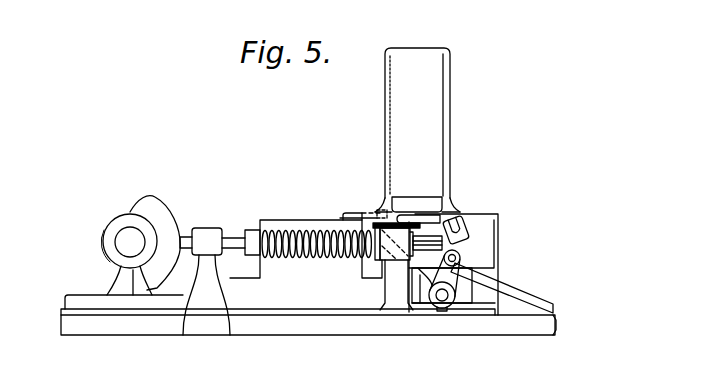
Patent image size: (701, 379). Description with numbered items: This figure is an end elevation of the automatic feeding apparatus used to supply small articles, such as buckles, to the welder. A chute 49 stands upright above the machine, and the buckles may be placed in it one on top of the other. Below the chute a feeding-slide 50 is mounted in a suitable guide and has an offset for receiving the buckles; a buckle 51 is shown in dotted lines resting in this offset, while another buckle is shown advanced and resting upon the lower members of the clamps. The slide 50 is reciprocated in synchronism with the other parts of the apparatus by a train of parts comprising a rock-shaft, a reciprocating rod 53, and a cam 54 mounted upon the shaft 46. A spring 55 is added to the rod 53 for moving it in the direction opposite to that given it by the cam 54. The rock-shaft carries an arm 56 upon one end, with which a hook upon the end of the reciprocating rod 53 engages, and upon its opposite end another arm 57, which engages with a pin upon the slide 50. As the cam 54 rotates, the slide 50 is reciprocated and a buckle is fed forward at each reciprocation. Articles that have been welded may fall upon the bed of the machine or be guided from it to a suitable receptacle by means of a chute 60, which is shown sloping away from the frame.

The shaft 46 is at (122, 240).
The cylinder 49 is at (387, 161).
The frame 50 is at (477, 217).
The plunger rod 51 is at (411, 214).
The nut 53 is at (233, 233).
The cam 54 is at (141, 205).
The spring 55 is at (302, 230).
The lever 56 is at (448, 277).
The fork 57 is at (466, 238).
The lever arm 60 is at (540, 305).